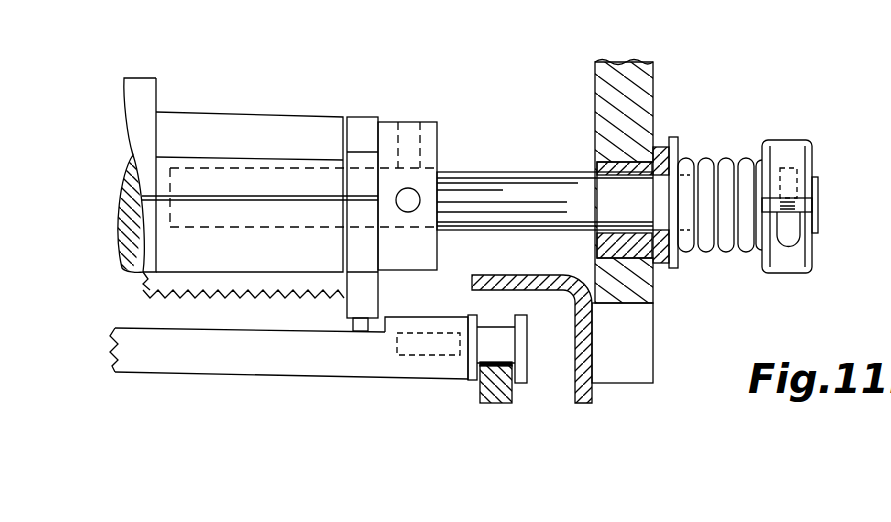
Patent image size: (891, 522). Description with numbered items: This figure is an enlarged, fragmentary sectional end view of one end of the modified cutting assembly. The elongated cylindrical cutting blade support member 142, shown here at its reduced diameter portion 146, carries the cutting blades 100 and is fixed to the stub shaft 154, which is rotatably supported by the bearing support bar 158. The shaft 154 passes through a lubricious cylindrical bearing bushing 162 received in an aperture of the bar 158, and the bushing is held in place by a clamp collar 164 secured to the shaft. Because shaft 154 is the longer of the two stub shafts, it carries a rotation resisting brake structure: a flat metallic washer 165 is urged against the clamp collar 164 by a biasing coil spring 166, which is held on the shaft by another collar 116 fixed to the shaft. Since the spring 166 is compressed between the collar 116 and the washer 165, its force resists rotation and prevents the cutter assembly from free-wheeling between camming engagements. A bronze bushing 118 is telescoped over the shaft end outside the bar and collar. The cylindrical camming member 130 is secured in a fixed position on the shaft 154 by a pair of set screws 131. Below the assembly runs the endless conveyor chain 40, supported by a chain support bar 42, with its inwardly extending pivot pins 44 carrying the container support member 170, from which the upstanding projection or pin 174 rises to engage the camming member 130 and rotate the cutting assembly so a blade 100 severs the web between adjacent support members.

The cutting blade 100 is at (140, 288).
The cutting blade support member 142 is at (178, 57).
The reduced diameter portion 146 is at (265, 92).
The projection or pin 174 is at (363, 333).
The camming member 130 is at (438, 123).
The set screw 131 is at (408, 128).
The stub shaft 154 is at (543, 173).
The bearing support bar 158 is at (643, 73).
The bearing bushing 162 is at (632, 158).
The clamp collar 164 is at (660, 263).
The washer 165 is at (673, 142).
The coil spring 166 is at (748, 152).
The collar 116 is at (792, 260).
The bronze bushing 118 is at (583, 395).
The conveyor chain 40 is at (528, 353).
The chain support bar 42 is at (492, 404).
The pivot pin 44 is at (428, 343).
The container support member 170 is at (197, 357).